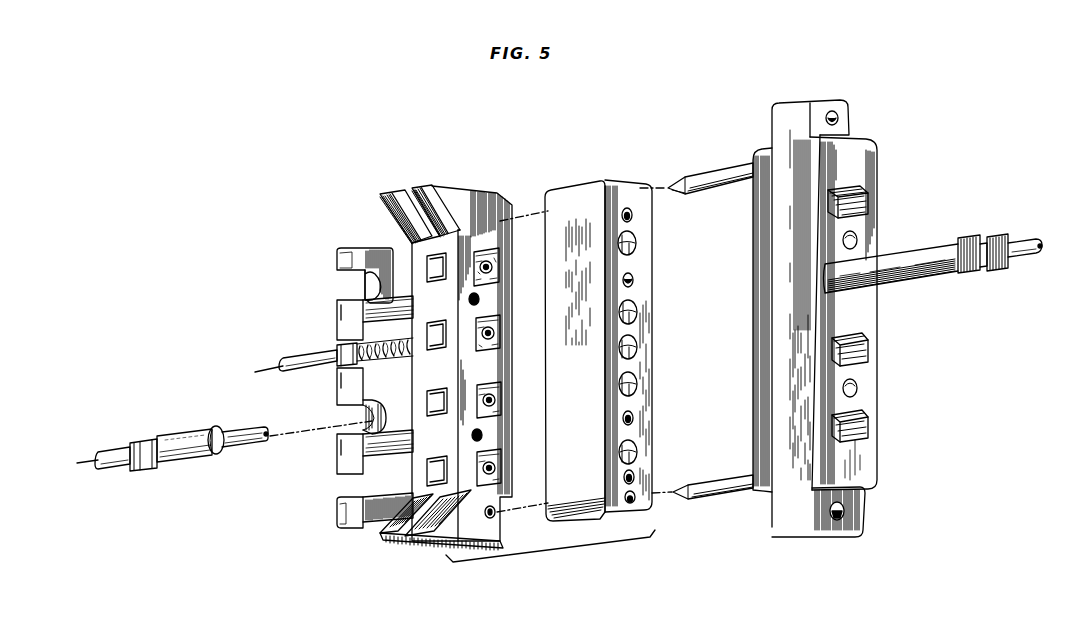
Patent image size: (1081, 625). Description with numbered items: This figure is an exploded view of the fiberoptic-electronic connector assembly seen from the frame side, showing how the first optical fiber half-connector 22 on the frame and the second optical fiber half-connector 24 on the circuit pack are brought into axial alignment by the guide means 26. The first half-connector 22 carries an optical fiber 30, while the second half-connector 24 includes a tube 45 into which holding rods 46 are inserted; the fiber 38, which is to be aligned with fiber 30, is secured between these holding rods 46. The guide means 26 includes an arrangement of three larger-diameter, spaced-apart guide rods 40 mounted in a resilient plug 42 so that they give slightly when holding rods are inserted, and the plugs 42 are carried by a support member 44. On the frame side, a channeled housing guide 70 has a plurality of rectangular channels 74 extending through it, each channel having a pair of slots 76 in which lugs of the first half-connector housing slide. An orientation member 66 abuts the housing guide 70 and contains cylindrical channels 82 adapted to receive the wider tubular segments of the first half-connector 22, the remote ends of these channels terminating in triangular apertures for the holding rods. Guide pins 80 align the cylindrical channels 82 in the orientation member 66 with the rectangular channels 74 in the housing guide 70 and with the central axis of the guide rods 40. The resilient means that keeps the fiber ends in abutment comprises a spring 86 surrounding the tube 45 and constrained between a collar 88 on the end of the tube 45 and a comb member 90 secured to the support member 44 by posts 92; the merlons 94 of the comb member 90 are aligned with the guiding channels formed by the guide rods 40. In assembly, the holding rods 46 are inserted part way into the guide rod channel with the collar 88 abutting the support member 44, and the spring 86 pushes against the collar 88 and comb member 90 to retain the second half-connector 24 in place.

The first optical fiber half-connector 22 is at (940, 259).
The second optical fiber half-connector 24 is at (340, 349).
The guide means 26 is at (557, 577).
The optical fiber 30 is at (1056, 243).
The optical fiber 38 is at (262, 368).
The guide rods 40 is at (498, 278).
The resilient plug 42 is at (500, 341).
The support member 44 is at (443, 192).
The tube 45 is at (190, 438).
The holding rods 46 is at (243, 449).
The orientation member 66 is at (581, 197).
The housing guide 70 is at (791, 104).
The rectangular channels 74 is at (872, 351).
The slots 76 is at (868, 205).
The guide pins 80 is at (722, 482).
The cylindrical channels 82 is at (634, 245).
The spring 86 is at (400, 364).
The collar 88 is at (217, 455).
The comb member 90 is at (362, 250).
The posts 92 is at (353, 449).
The merlons 94 is at (352, 299).